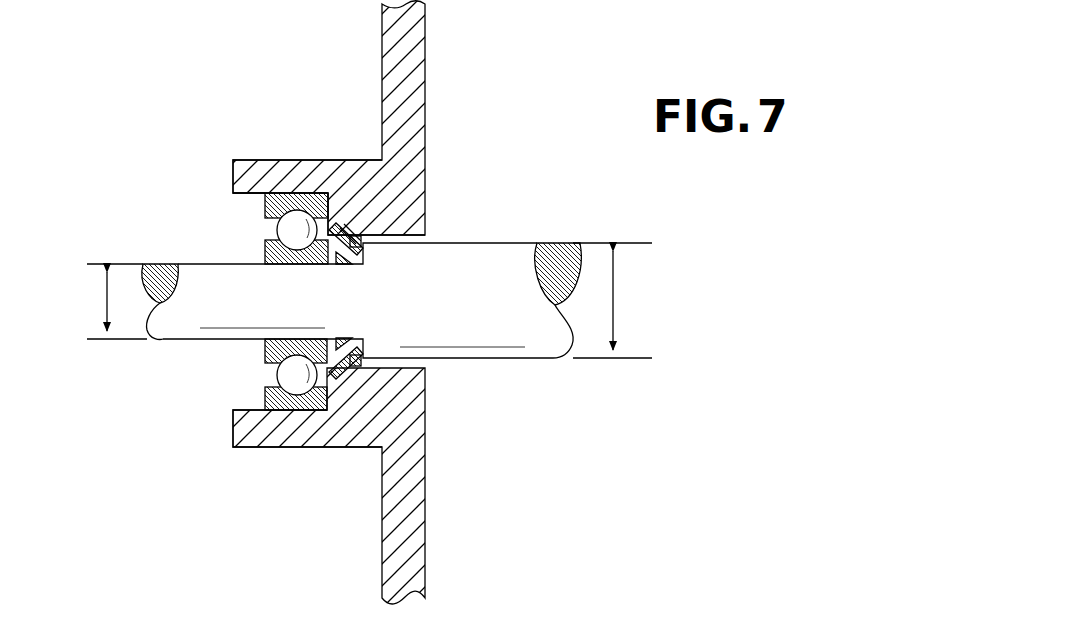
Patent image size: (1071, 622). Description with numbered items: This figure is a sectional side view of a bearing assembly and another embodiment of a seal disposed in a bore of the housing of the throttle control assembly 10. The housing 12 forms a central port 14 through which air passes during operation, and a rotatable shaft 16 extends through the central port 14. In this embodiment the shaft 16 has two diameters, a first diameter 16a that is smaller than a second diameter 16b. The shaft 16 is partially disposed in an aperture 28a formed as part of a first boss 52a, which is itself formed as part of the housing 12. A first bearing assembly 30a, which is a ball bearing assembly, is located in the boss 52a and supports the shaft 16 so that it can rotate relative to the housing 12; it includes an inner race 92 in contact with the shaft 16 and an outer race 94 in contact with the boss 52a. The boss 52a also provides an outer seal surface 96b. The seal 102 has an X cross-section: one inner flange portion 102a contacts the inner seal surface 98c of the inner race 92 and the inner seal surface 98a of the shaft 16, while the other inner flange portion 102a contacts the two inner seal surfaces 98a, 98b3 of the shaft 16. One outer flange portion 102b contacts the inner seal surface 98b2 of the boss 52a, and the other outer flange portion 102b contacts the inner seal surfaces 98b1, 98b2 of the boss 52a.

The throttle control assembly 10 is at (188, 96).
The housing 12 is at (407, 80).
The central port 14 is at (507, 155).
The shaft 16 is at (542, 243).
The first diameter 16a is at (107, 310).
The second diameter 16b is at (617, 290).
The aperture 28a is at (402, 240).
The first bearing assembly 30a is at (246, 208).
The first boss 52a is at (305, 160).
The inner race 92 is at (235, 198).
The outer race 94 is at (265, 160).
The outer seal surface 96b is at (258, 412).
The inner seal surface 98a is at (285, 368).
The inner seal surface 98b1 is at (358, 358).
The inner seal surface 98b2 is at (358, 368).
The inner seal surface 98b3 is at (366, 250).
The inner seal surface 98c is at (300, 264).
The seal 102 is at (395, 216).
The inner flange portion 102a is at (352, 256).
The outer flange portion 102b is at (350, 240).